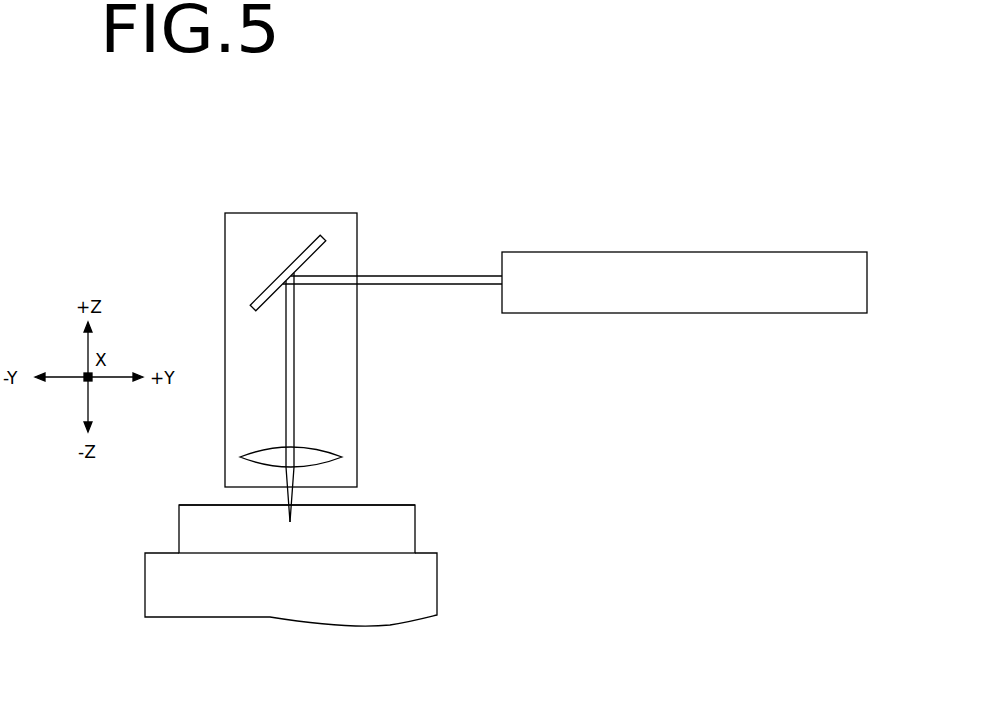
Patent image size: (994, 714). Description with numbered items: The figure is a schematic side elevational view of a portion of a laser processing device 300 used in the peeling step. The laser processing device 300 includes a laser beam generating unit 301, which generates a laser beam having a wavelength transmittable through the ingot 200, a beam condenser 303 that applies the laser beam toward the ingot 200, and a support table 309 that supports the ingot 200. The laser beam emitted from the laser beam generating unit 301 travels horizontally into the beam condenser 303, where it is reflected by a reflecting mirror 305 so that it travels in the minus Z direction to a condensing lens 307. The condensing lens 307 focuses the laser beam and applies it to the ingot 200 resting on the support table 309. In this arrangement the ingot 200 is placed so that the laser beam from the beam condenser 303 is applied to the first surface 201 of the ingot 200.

The laser processing device 300 is at (421, 149).
The laser beam generating unit 301 is at (690, 252).
The beam condenser 303 is at (242, 213).
The reflecting mirror 305 is at (309, 250).
The condensing lens 307 is at (313, 447).
The support table 309 is at (275, 600).
The ingot 200 is at (398, 528).
The first surface 201 is at (386, 505).